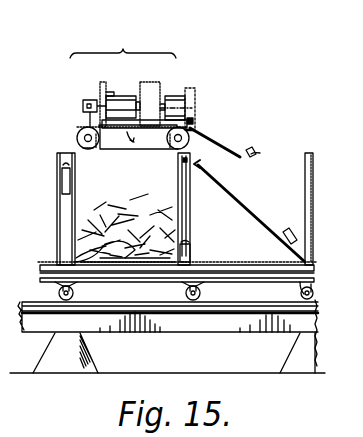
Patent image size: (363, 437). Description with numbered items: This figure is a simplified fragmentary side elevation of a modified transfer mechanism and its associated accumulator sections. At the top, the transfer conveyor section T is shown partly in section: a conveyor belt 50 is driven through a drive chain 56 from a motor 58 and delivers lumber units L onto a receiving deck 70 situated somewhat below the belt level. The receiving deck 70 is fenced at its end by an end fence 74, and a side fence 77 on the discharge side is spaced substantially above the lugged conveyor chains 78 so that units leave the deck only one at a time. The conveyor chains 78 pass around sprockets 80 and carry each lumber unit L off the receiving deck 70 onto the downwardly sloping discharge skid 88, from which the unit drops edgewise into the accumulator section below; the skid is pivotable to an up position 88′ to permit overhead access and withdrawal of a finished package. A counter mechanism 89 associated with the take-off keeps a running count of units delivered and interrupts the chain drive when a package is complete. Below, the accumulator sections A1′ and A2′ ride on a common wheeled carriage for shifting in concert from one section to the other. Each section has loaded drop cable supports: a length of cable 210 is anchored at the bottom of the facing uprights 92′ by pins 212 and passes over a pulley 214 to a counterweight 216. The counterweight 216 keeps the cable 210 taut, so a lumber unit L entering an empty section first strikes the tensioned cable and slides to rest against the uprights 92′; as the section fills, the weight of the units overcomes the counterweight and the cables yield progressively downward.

The transfer conveyor section T is at (123, 44).
The conveyor belt 50 is at (116, 93).
The drive chain 56 is at (175, 102).
The motor 58 is at (187, 93).
The receiving deck 70 is at (144, 135).
The end fence 74 is at (97, 94).
The side fence 77 is at (147, 93).
The lugged conveyor chain 78 is at (82, 126).
The sprocket 80 is at (82, 138).
The discharge skid 88 is at (208, 132).
The discharge skid up position 88′ is at (203, 88).
The counter mechanism 89 is at (80, 104).
The facing upright 92′ is at (58, 159).
The cable 210 is at (228, 196).
The pin 212 is at (312, 258).
The pulley 214 is at (183, 166).
The counterweight 216 is at (71, 188).
The accumulator section A1′ is at (230, 226).
The accumulator section A2′ is at (128, 173).
The lumber unit L is at (132, 217).